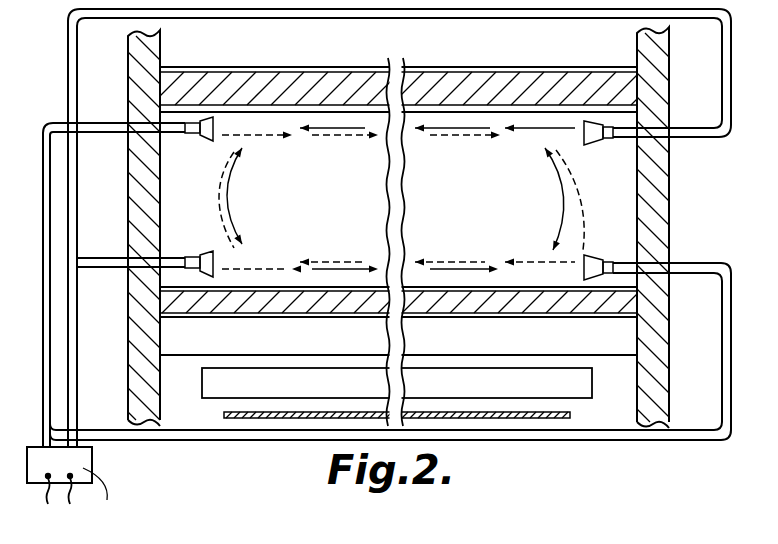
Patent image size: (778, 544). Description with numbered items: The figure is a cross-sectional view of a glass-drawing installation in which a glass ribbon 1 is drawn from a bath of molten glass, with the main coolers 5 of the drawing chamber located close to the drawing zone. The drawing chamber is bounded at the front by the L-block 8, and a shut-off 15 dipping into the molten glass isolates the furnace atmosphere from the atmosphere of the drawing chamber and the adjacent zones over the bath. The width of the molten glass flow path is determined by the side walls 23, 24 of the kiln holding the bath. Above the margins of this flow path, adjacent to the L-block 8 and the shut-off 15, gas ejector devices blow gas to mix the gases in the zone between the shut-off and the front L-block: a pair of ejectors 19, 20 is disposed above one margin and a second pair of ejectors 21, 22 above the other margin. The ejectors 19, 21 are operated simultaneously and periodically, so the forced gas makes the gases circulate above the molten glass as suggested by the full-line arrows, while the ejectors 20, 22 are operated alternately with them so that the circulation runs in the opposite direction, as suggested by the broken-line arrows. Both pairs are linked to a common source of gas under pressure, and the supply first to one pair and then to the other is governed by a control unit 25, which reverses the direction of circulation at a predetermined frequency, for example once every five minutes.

The glass ribbon 1 is at (572, 416).
The main coolers 5 is at (253, 378).
The front L-block 8 is at (195, 297).
The shut-off 15 is at (432, 92).
The ejector 19 is at (198, 258).
The ejector 20 is at (198, 137).
The ejector 21 is at (597, 134).
The ejector 22 is at (593, 265).
The side wall 23 is at (148, 86).
The side wall 24 is at (653, 85).
The control unit 25 is at (58, 463).